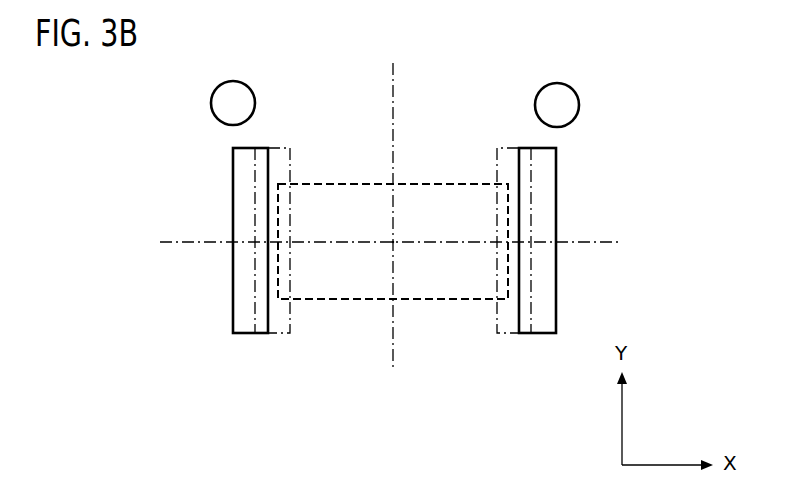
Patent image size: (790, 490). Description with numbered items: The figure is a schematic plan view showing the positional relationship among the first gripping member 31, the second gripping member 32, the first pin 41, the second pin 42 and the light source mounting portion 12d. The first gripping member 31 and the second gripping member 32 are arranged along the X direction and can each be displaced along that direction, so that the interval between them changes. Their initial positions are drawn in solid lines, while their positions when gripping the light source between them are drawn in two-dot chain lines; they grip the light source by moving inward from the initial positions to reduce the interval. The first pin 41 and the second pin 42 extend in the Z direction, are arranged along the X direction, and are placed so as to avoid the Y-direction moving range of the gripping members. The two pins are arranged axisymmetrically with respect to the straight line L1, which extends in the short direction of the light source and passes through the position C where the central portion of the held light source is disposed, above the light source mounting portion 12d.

The first pin 41 is at (232, 100).
The second pin 42 is at (554, 103).
The first gripping member 31 is at (275, 334).
The second gripping member 32 is at (510, 334).
The light source mounting portion 12d is at (338, 300).
The straight line L1 is at (393, 130).
The position C is at (393, 241).